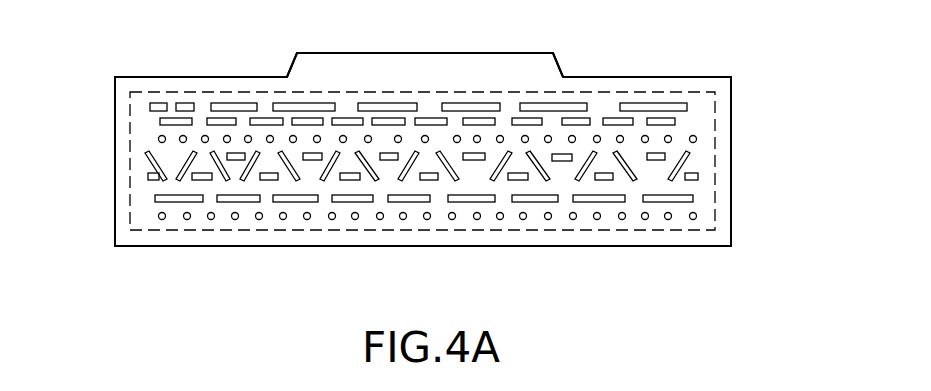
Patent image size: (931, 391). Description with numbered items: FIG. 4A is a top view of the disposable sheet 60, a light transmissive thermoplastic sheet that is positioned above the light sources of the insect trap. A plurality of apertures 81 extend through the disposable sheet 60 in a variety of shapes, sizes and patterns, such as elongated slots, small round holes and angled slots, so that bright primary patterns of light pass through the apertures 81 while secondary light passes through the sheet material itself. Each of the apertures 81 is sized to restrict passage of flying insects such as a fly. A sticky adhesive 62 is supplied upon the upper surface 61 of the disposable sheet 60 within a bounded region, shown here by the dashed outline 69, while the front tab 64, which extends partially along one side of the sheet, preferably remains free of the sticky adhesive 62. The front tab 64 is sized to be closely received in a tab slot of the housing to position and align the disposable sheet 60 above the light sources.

The disposable sheet 60 is at (222, 262).
The upper surface 61 is at (350, 72).
The sticky adhesive 62 is at (144, 129).
The front tab 64 is at (510, 52).
The peripheral margin 69 is at (149, 82).
The apertures 81 is at (567, 130).